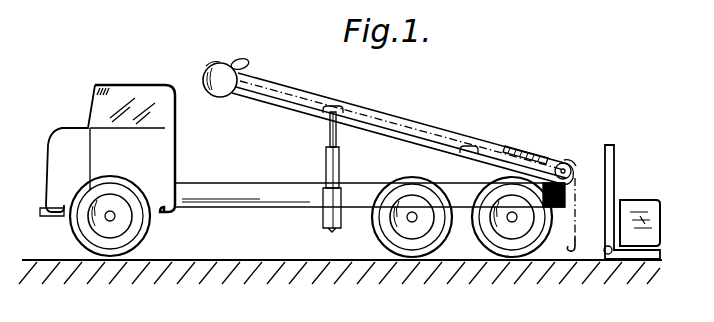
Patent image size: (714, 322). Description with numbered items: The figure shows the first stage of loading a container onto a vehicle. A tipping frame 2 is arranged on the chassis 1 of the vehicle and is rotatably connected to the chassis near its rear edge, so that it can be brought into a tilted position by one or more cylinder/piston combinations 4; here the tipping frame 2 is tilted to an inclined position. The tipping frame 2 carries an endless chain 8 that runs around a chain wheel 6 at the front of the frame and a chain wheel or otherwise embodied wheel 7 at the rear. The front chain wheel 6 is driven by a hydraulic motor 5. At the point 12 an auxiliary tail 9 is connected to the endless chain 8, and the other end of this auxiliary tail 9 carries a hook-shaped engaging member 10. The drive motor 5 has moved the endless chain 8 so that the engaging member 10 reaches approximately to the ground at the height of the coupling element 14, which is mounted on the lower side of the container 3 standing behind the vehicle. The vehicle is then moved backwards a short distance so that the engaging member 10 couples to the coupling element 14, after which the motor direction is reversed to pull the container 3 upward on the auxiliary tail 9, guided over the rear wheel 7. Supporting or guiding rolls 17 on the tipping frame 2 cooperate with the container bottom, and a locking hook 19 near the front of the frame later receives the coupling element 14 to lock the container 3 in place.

The chassis 1 is at (232, 196).
The tipping frame 2 is at (398, 122).
The container 3 is at (637, 194).
The cylinder/piston combination 4 is at (327, 159).
The hydraulic motor 5 is at (210, 64).
The chain wheel 6 is at (212, 97).
The rear wheel 7 is at (573, 162).
The endless chain 8 is at (334, 104).
The auxiliary tail 9 is at (577, 222).
The engaging member 10 is at (572, 254).
The point 12 is at (513, 146).
The coupling element 14 is at (603, 270).
The supporting rolls 17 is at (566, 163).
The locking hook 19 is at (244, 60).